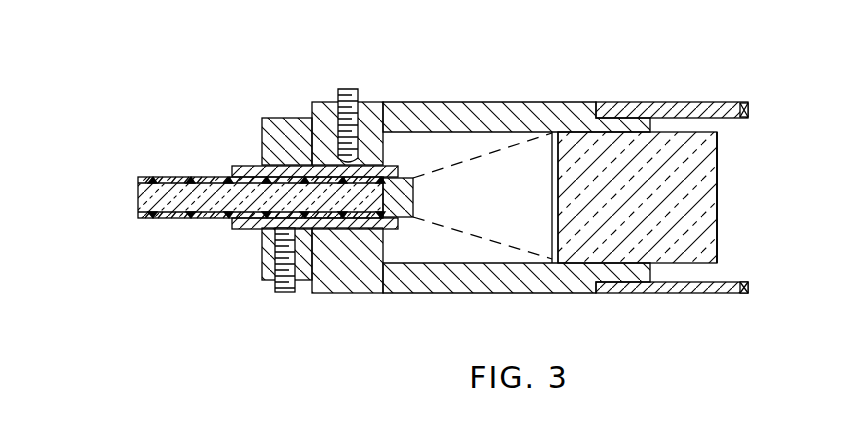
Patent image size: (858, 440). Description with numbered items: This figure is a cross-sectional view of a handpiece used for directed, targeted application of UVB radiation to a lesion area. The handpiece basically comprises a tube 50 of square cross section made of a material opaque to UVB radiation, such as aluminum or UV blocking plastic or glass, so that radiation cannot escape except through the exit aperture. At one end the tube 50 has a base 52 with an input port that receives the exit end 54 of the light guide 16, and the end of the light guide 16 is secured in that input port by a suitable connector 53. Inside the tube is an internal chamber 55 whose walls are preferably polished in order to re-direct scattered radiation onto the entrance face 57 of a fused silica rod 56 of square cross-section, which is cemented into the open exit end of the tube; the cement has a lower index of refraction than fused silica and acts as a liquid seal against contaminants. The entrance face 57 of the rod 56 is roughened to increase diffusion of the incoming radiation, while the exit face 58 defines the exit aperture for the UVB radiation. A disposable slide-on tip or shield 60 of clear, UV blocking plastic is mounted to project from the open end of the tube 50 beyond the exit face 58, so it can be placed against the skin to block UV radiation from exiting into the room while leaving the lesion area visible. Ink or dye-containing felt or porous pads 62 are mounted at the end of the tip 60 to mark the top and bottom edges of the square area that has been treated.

The light guide 16 is at (200, 177).
The tube 50 is at (440, 292).
The base 52 is at (322, 285).
The connector 53 is at (277, 243).
The exit end of the light guide 54 is at (414, 197).
The internal chamber 55 is at (500, 160).
The fused silica rod 56 is at (675, 157).
The entrance face 57 is at (553, 222).
The exit face 58 is at (717, 185).
The slide-on tip or shield 60 is at (670, 103).
The pads 62 is at (745, 105).